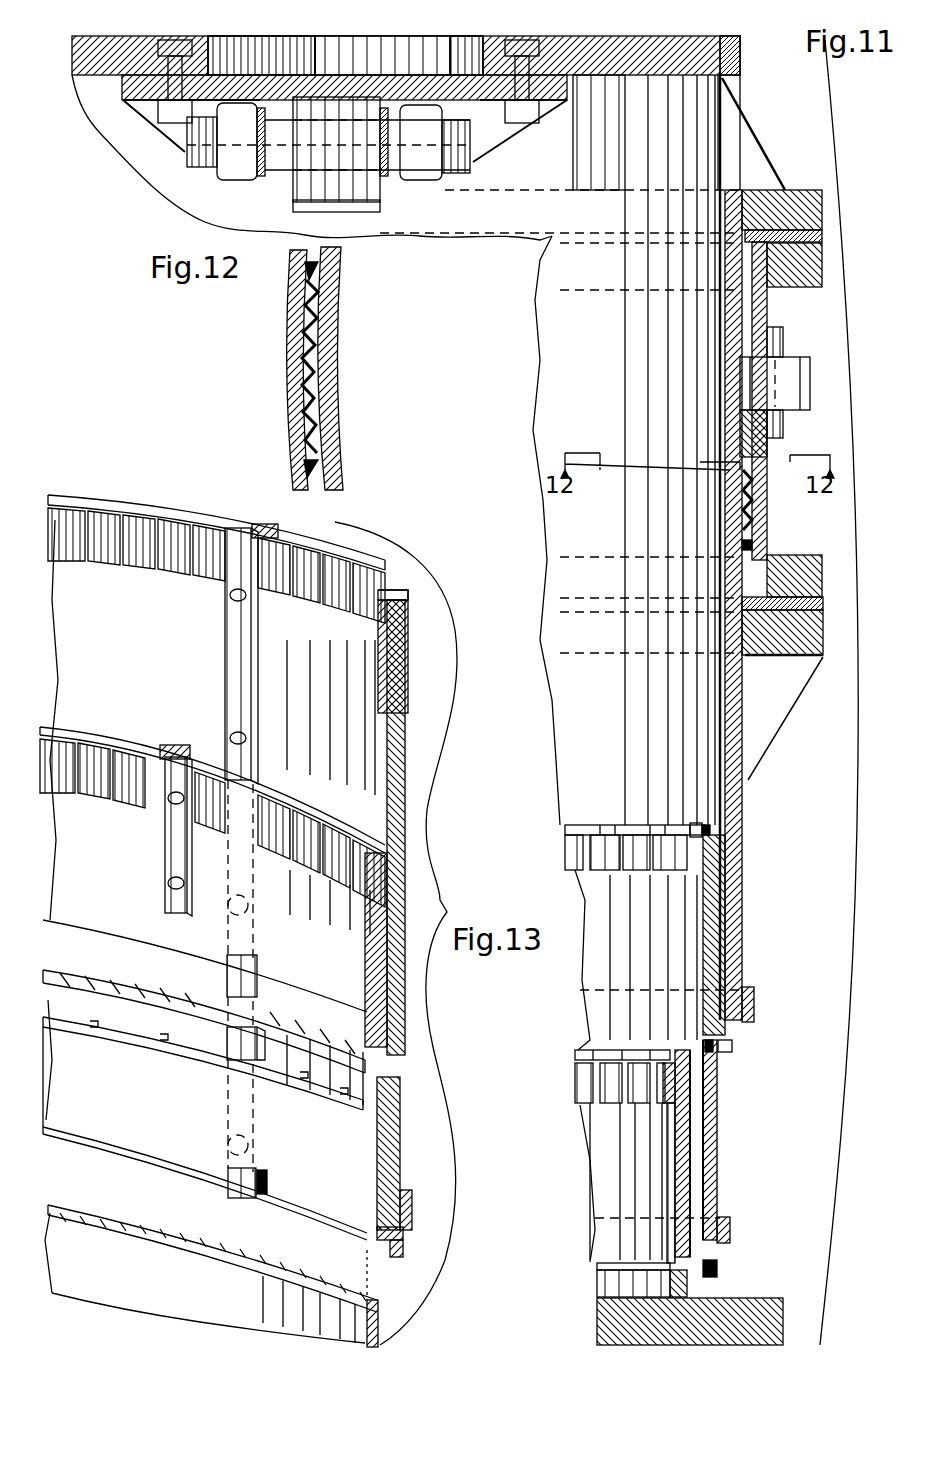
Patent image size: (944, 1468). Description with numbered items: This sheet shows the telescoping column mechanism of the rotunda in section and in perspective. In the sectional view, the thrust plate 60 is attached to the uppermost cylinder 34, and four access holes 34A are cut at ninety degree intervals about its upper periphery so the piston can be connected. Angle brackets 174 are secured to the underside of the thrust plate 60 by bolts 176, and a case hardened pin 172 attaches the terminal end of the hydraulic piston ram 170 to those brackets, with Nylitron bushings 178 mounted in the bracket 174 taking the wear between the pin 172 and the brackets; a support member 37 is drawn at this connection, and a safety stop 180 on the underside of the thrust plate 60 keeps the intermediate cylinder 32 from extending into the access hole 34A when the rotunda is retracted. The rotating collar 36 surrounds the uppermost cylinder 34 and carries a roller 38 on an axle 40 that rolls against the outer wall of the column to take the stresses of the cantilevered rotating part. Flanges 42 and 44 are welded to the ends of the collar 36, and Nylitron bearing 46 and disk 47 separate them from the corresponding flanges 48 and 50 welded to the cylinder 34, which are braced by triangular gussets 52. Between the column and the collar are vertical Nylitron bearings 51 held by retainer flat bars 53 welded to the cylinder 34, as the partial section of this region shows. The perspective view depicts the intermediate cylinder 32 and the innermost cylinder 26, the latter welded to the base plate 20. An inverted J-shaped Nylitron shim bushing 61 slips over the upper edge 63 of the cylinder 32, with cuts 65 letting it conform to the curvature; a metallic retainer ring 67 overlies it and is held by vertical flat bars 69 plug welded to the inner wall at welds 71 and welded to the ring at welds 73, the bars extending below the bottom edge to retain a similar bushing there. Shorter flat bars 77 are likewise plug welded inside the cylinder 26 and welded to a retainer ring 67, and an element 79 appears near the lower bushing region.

In FIG. 11, the base plate 20 is at (620, 1320).
In FIG. 11, the innermost cylinder 26 is at (720, 1122).
In FIG. 13, the innermost cylinder 26 is at (95, 935).
In FIG. 11, the intermediate cylinder 32 is at (727, 910).
In FIG. 13, the intermediate cylinder 32 is at (405, 748).
In FIG. 11, the uppermost cylinder 34 is at (740, 185).
In FIG. 12, the uppermost cylinder 34 is at (292, 333).
In FIG. 11, the access hole 34A is at (725, 115).
In FIG. 11, the rotating collar 36 is at (768, 310).
In FIG. 12, the rotating collar 36 is at (335, 380).
In FIG. 11, the support bracket 37 is at (335, 95).
In FIG. 11, the roller 38 is at (800, 383).
In FIG. 11, the axle 40 is at (785, 337).
In FIG. 11, the flange 42 is at (812, 287).
In FIG. 11, the flange 44 is at (792, 570).
In FIG. 11, the bearing 46 is at (820, 236).
In FIG. 11, the disk 47 is at (825, 598).
In FIG. 11, the flange 48 is at (805, 188).
In FIG. 11, the flange 50 is at (828, 650).
In FIG. 11, the bearing 51 is at (758, 468).
In FIG. 12, the bearing 51 is at (318, 325).
In FIG. 11, the gusset 52 is at (748, 140).
In FIG. 11, the retainer flat bar 53 is at (765, 522).
In FIG. 12, the retainer flat bar 53 is at (318, 292).
In FIG. 11, the thrust plate 60 is at (600, 38).
In FIG. 11, the shim bushing 61 is at (757, 995).
In FIG. 13, the shim bushing 61 is at (390, 595).
In FIG. 13, the upper edge 63 is at (408, 605).
In FIG. 13, the cut 65 is at (330, 578).
In FIG. 11, the retainer ring 67 is at (600, 828).
In FIG. 13, the retainer ring 67 is at (200, 508).
In FIG. 11, the flat bar 69 is at (720, 352).
In FIG. 13, the flat bar 69 is at (226, 646).
In FIG. 13, the plug weld 71 is at (230, 595).
In FIG. 11, the weld 73 is at (710, 820).
In FIG. 13, the weld 73 is at (262, 538).
In FIG. 11, the flat bar 77 is at (665, 1140).
In FIG. 13, the flat bar 77 is at (165, 852).
In FIG. 13, the flange 79 is at (403, 1235).
In FIG. 11, the piston ram 170 is at (385, 195).
In FIG. 11, the pin 172 is at (260, 170).
In FIG. 11, the bracket 174 is at (125, 107).
In FIG. 11, the bolt 176 is at (172, 45).
In FIG. 11, the bushing 178 is at (418, 95).
In FIG. 11, the safety stop 180 is at (585, 195).